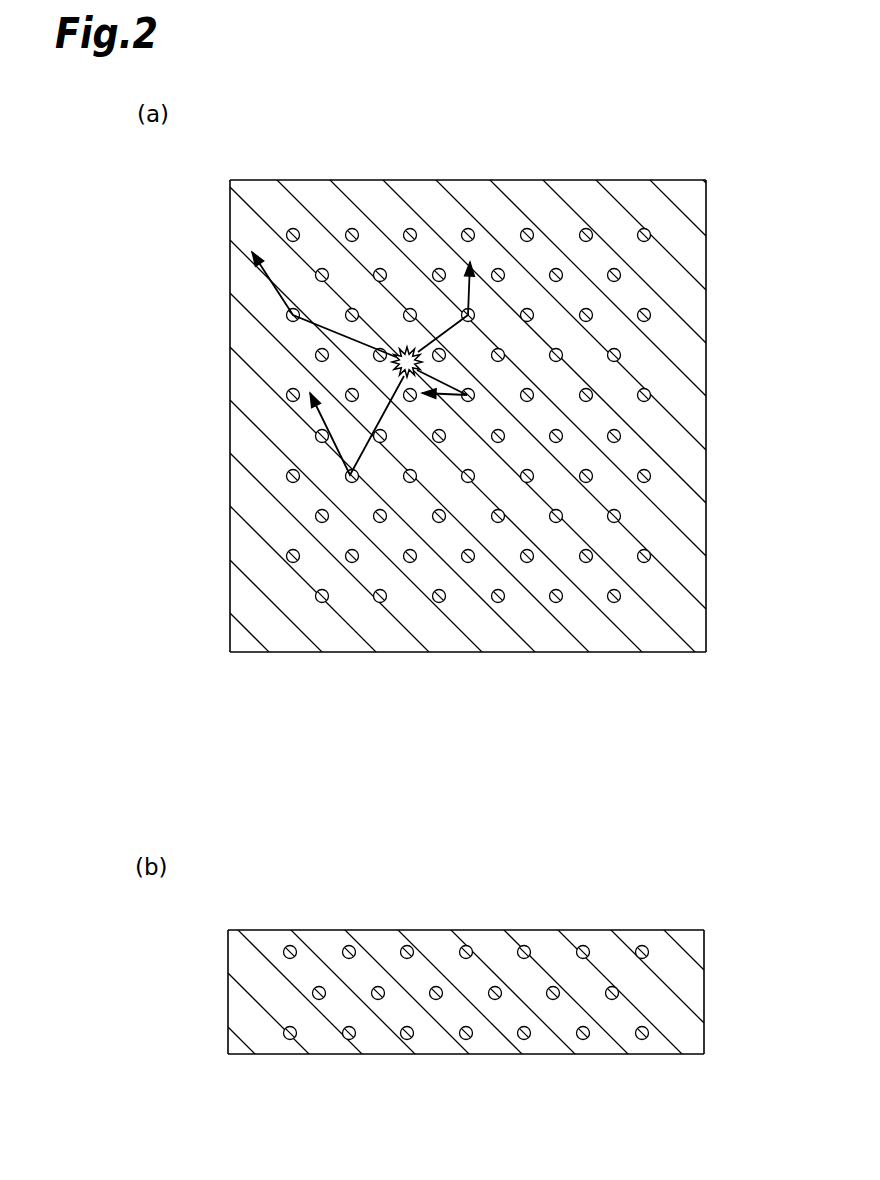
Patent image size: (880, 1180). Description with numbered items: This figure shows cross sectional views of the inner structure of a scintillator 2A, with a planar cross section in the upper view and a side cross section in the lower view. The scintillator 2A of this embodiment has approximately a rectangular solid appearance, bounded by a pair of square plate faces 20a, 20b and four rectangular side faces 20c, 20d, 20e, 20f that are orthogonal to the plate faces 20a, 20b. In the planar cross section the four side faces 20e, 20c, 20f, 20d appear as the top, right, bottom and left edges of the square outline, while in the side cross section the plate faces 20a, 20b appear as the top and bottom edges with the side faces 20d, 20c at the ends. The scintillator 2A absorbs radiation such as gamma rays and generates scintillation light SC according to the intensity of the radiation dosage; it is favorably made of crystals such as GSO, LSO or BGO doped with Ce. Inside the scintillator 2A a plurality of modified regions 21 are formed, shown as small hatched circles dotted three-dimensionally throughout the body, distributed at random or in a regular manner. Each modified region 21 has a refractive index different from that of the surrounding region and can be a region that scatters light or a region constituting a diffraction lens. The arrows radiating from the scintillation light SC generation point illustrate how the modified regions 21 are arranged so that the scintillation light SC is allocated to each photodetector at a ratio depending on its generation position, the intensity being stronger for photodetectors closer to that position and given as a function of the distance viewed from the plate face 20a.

The scintillator 2A is at (638, 180).
The plate face 20a is at (465, 930).
The plate face 20b is at (465, 1054).
The side face 20c is at (706, 417).
The side face 20d is at (230, 417).
The side face 20e is at (468, 181).
The side face 20f is at (468, 652).
The modified region 21 is at (651, 315).
The scintillation light SC is at (406, 350).